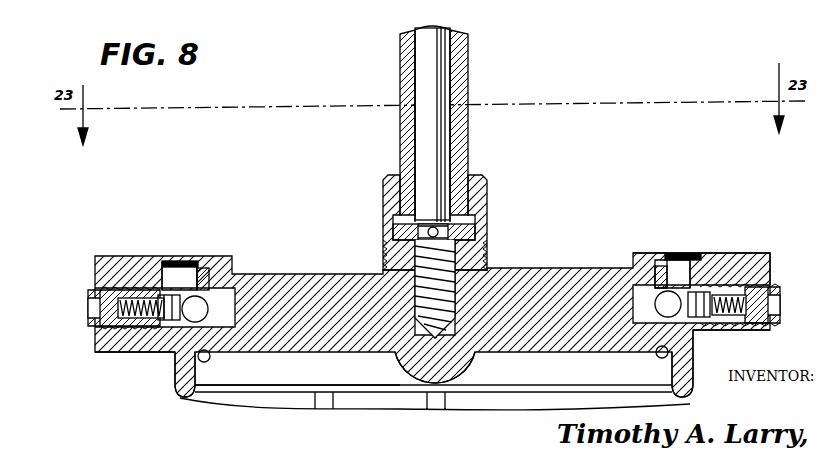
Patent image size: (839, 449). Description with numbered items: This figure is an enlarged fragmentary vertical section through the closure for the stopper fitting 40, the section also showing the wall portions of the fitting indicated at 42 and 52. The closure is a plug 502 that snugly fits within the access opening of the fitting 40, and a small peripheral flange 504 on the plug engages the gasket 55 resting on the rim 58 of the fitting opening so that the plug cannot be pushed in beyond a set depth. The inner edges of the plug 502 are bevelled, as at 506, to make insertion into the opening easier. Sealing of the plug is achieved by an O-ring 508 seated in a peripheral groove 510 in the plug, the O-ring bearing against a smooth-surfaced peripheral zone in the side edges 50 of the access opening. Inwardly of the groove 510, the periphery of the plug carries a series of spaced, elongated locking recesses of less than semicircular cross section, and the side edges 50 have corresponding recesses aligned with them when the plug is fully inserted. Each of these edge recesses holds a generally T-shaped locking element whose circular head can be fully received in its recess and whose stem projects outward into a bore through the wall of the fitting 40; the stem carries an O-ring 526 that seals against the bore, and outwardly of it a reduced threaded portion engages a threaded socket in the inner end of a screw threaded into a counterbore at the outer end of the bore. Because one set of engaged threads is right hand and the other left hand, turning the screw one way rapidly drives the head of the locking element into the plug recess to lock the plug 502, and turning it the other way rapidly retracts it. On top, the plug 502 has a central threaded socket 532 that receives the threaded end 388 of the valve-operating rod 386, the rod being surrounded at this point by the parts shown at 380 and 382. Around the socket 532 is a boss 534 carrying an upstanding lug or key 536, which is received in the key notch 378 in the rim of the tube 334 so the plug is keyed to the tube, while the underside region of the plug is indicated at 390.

The stopper fitting 40 is at (770, 258).
The housing lip 42 is at (180, 366).
The side edges of the access opening 50 is at (177, 384).
The housing body 52 is at (95, 283).
The gasket 55 is at (180, 290).
The rim 58 is at (688, 272).
The tube 334 is at (469, 132).
The key notch 378 is at (440, 230).
The valve disc 380 is at (478, 232).
The collar fitting 382 is at (488, 186).
The valve-operating rod 386 is at (469, 62).
The threaded end 388 is at (457, 290).
The boss 390 is at (442, 338).
The plug 502 is at (318, 358).
The peripheral flange 504 is at (198, 268).
The bevelled inner edges 506 is at (691, 360).
The O-ring 508 is at (661, 266).
The peripheral groove 510 is at (208, 278).
The O-ring 526 is at (170, 290).
The central threaded socket 532 is at (435, 338).
The boss 534 is at (487, 258).
The lug or key 536 is at (386, 238).